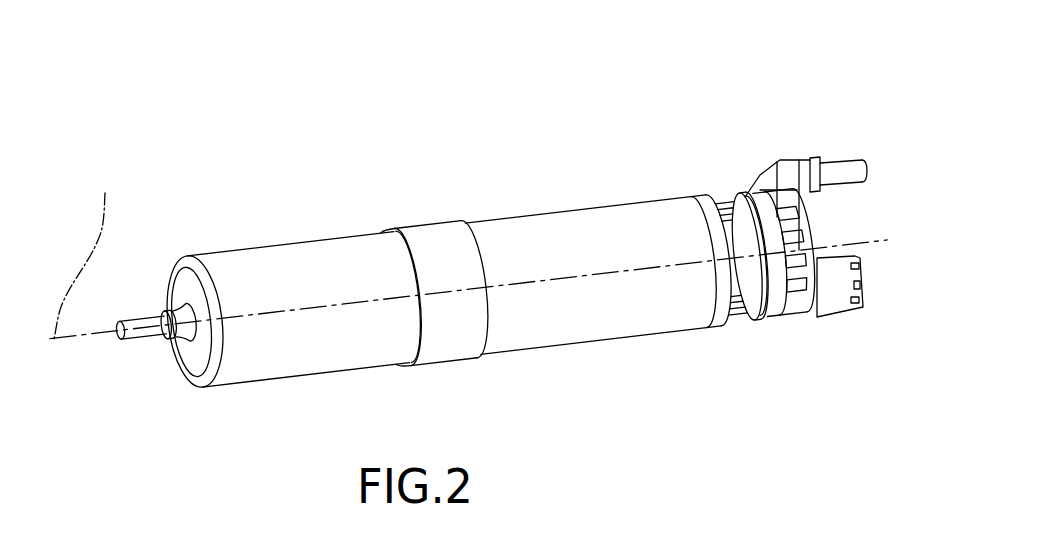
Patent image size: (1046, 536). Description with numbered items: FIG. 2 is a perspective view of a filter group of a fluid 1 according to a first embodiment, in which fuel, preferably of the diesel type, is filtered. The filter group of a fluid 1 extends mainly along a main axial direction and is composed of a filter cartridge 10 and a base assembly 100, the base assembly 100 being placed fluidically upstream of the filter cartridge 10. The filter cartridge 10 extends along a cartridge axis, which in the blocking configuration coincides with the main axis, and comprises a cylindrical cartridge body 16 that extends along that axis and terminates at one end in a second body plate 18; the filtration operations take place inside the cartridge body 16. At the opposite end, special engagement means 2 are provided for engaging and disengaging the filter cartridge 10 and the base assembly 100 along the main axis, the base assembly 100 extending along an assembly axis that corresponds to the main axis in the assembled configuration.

The filter group of a fluid 1 is at (292, 105).
The filter cartridge 10 is at (463, 193).
The cartridge body 16 is at (590, 345).
The second body plate 18 is at (198, 363).
The engagement means 2 is at (728, 165).
The base assembly 100 is at (818, 130).